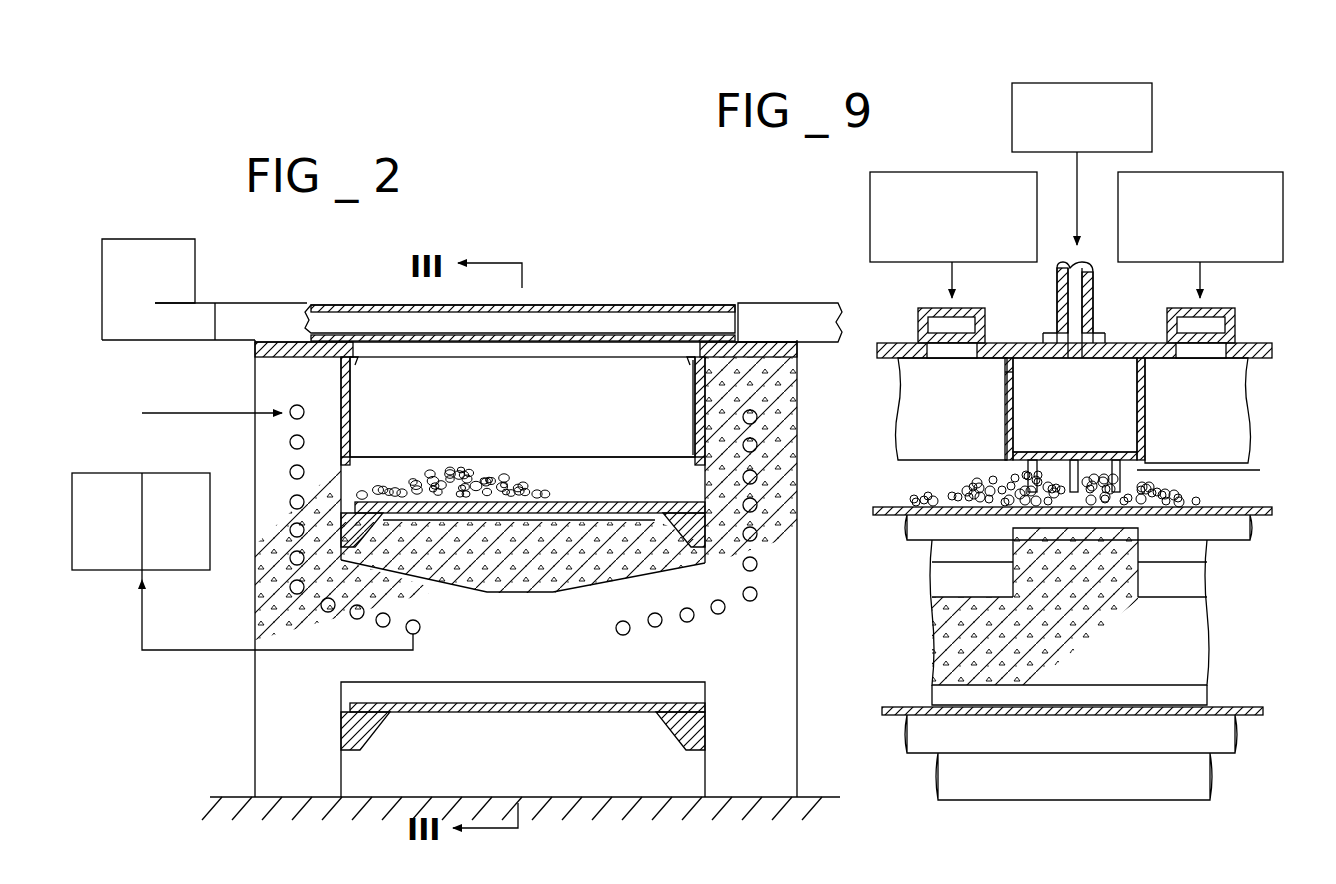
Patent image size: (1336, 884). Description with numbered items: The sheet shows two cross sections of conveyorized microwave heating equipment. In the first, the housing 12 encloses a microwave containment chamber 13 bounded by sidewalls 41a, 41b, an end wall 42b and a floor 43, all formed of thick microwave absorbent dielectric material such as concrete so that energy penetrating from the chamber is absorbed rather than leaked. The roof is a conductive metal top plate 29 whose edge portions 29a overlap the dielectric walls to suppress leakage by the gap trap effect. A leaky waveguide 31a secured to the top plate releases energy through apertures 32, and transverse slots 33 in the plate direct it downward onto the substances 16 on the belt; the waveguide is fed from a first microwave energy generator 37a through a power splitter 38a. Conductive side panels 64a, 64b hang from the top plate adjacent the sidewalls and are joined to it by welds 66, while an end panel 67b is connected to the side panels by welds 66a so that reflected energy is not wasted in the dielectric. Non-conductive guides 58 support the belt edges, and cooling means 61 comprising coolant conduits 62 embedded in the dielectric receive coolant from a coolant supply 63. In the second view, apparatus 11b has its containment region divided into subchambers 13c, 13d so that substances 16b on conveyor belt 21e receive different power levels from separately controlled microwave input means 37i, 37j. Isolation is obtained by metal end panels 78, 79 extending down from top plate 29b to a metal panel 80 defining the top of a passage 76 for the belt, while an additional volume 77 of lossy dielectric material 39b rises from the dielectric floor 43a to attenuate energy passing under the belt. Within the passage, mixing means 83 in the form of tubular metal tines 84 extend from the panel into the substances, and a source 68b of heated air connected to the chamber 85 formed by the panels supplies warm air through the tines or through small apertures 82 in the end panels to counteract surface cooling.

In FIG. 2, the microwave containment housing 12 is at (212, 383).
In FIG. 2, the microwave containment chamber 13 is at (574, 591).
In FIG. 2, the substances 16 is at (530, 490).
In FIG. 2, the top plate 29 is at (262, 345).
In FIG. 2, the edge portions of top plate 29a is at (806, 357).
In FIG. 2, the first waveguide 31a is at (598, 305).
In FIG. 2, the apertures 32 is at (577, 345).
In FIG. 2, the transverse slots 33 is at (364, 350).
In FIG. 2, the first microwave energy generator 37a is at (172, 287).
In FIG. 2, the power splitter 38a is at (152, 325).
In FIG. 2, the sidewall 41a is at (257, 450).
In FIG. 2, the sidewall 41b is at (704, 480).
In FIG. 2, the end wall 42b is at (538, 564).
In FIG. 2, the floor 43 is at (483, 659).
In FIG. 2, the guides 58 is at (366, 532).
In FIG. 2, the cooling means 61 is at (110, 578).
In FIG. 2, the coolant conduits 62 is at (320, 383).
In FIG. 2, the coolant supply 63 is at (128, 558).
In FIG. 2, the side panel 64a is at (351, 403).
In FIG. 2, the side panel 64b is at (700, 420).
In FIG. 2, the welds 66 is at (700, 357).
In FIG. 2, the welds 66a is at (700, 390).
In FIG. 2, the end panel 67b is at (522, 388).
In FIG. 9, the microwave heating apparatus 11b is at (1250, 322).
In FIG. 9, the subchamber 13c is at (1192, 580).
In FIG. 9, the subchamber 13d is at (952, 578).
In FIG. 9, the substances 16b is at (935, 483).
In FIG. 9, the conveyor belt 21e is at (1263, 520).
In FIG. 9, the top plate 29b is at (1164, 367).
In FIG. 9, the microwave input means 37i is at (973, 168).
In FIG. 9, the microwave input means 37j is at (1269, 138).
In FIG. 9, the microwave absorbent dielectric material 39b is at (957, 643).
In FIG. 9, the dielectric floor 43a is at (1182, 656).
In FIG. 9, the source of heated air 68b is at (1153, 117).
In FIG. 9, the passage 76 is at (1138, 470).
In FIG. 9, the additional volume of lossy dielectric material 77 is at (1117, 566).
In FIG. 9, the subchamber end panel 78 is at (1005, 417).
In FIG. 9, the subchamber end panel 79 is at (1146, 427).
In FIG. 9, the metal panel 80 is at (1057, 452).
In FIG. 9, the apertures 82 is at (1003, 372).
In FIG. 9, the mixing means 83 is at (1014, 461).
In FIG. 9, the tubular metal tines 84 is at (1150, 508).
In FIG. 9, the chamber 85 is at (1018, 393).